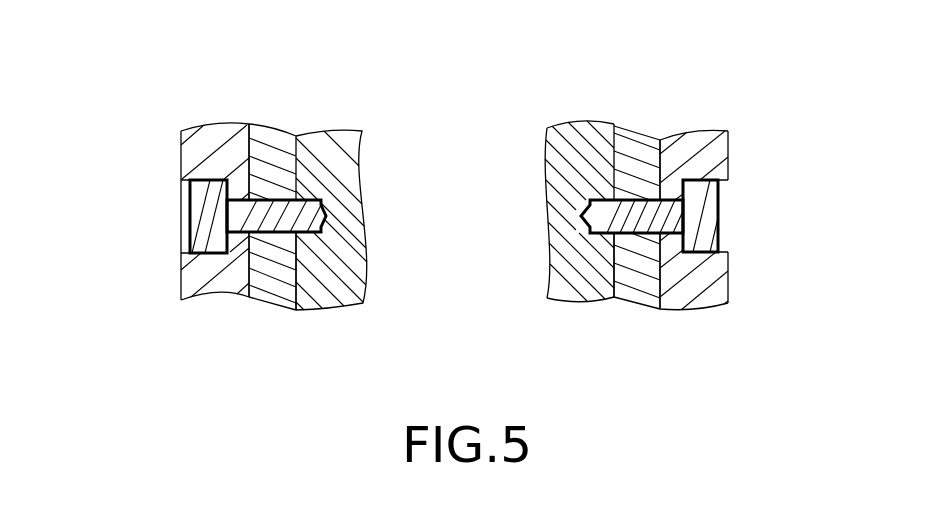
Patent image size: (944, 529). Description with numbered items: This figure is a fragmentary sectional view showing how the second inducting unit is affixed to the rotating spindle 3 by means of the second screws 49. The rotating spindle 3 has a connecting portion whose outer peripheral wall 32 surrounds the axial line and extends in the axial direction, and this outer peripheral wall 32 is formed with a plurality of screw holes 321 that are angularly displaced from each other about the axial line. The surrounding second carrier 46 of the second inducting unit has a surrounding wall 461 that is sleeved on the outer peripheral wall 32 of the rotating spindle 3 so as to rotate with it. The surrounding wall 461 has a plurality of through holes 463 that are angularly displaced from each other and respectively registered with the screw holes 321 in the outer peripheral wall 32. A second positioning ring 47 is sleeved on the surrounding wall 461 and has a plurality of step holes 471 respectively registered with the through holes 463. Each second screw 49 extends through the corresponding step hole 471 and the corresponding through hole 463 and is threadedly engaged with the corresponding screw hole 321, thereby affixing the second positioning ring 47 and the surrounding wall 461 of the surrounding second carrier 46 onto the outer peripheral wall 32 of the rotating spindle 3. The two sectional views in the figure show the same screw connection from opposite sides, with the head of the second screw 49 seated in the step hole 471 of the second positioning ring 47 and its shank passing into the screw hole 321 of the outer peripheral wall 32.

The rotating spindle 3 is at (352, 127).
The outer peripheral wall 32 is at (278, 152).
The screw holes 321 is at (305, 198).
The surrounding second carrier 46 is at (420, 312).
The surrounding wall 461 is at (270, 265).
The through holes 463 is at (286, 235).
The second positioning ring 47 is at (200, 162).
The step holes 471 is at (236, 198).
The second screws 49 is at (213, 217).